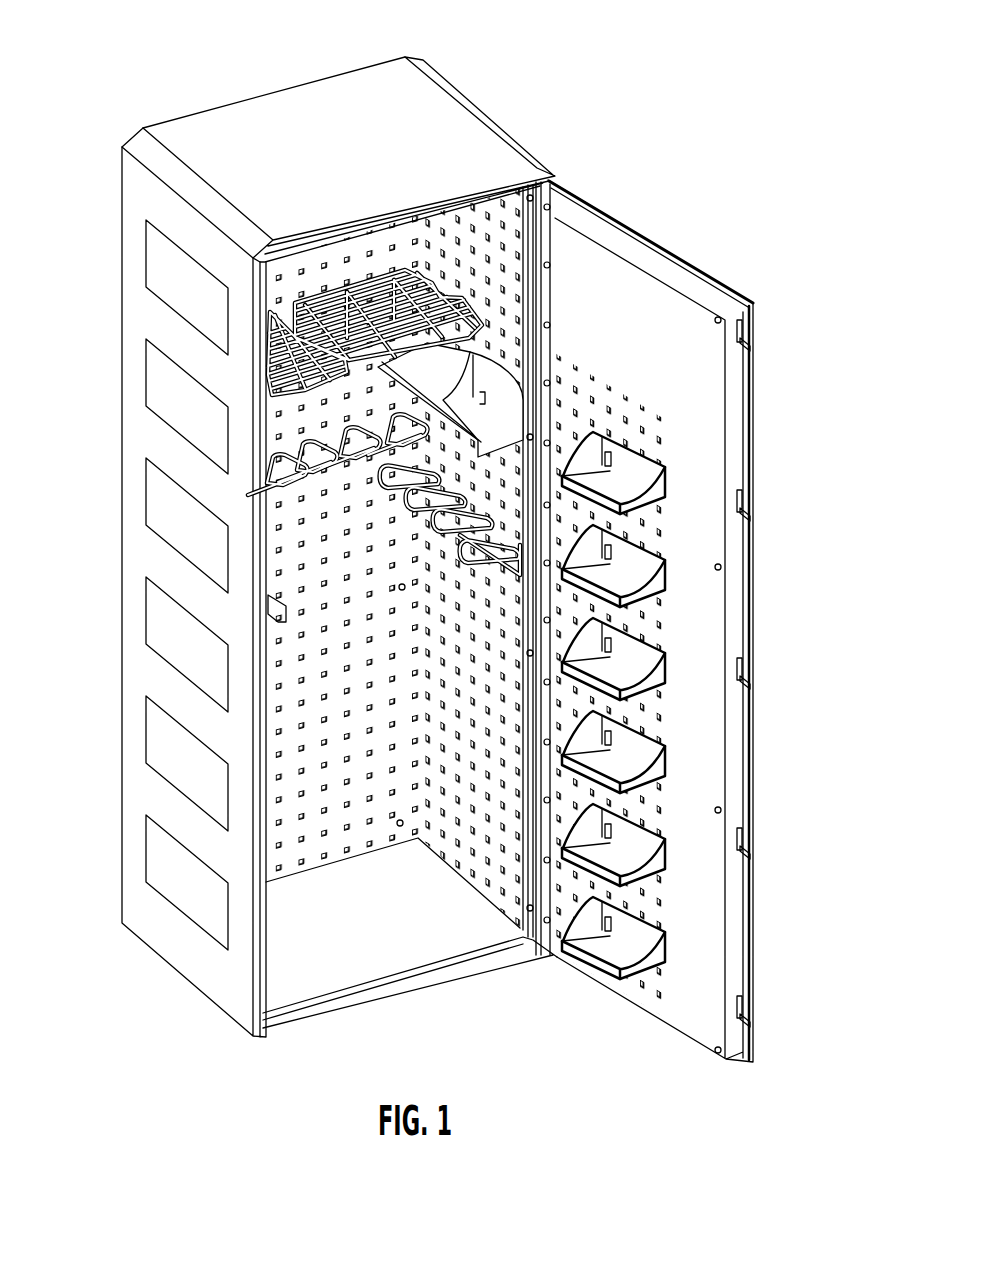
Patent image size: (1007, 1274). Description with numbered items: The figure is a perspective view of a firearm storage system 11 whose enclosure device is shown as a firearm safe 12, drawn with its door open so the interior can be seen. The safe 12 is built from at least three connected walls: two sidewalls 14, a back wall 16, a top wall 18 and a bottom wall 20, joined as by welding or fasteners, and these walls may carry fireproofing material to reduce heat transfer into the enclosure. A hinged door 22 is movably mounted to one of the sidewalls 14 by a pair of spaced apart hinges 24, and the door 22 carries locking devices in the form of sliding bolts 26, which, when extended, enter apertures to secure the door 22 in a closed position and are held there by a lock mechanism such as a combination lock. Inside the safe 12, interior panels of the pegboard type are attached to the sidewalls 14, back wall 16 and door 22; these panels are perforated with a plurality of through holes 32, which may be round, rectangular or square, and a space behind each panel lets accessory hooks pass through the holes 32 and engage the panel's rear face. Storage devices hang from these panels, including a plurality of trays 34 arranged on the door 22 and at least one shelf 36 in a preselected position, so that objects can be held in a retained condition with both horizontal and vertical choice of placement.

The firearm storage system 11 is at (448, 537).
The firearm safe 12 is at (316, 529).
The sidewalls 14 is at (130, 272).
The back wall 16 is at (297, 85).
The top wall 18 is at (383, 70).
The bottom wall 20 is at (387, 998).
The hinged door 22 is at (672, 623).
The hinges 24 is at (550, 313).
The sliding bolts 26 is at (750, 690).
The through holes 32 is at (480, 890).
The trays 34 is at (620, 992).
The shelves 36 is at (450, 287).